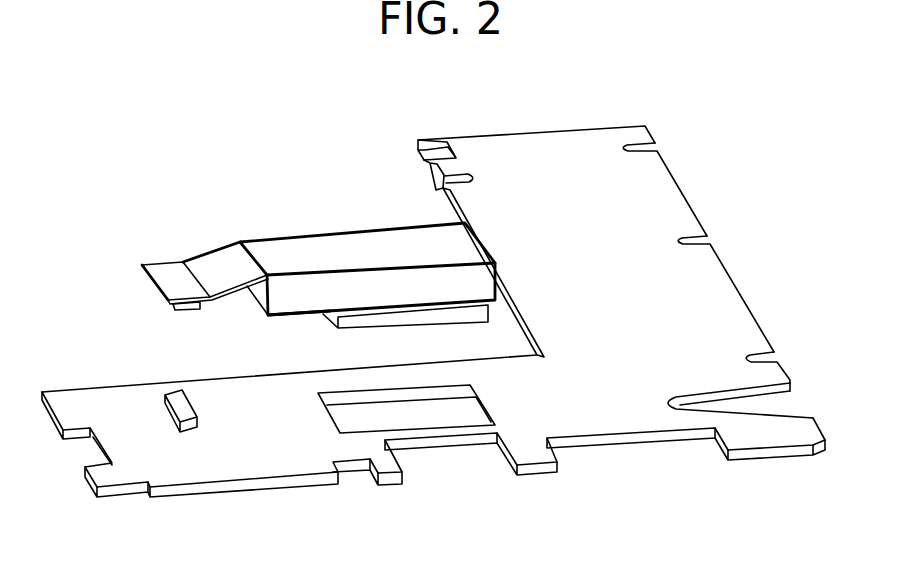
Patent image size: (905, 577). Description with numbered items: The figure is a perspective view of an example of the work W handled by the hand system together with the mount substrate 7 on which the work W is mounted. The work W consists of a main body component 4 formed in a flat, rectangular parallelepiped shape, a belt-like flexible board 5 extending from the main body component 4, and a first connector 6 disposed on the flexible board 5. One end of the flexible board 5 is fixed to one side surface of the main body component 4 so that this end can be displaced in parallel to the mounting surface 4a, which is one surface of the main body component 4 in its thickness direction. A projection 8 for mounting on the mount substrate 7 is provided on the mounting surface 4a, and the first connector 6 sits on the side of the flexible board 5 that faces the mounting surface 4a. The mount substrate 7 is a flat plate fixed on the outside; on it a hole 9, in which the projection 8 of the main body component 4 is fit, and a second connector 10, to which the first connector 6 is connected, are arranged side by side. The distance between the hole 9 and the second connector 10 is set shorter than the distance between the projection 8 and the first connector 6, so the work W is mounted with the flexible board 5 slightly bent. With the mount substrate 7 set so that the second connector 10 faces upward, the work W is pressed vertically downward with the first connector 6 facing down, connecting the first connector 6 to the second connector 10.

The main body component 4 is at (337, 230).
The mounting surface 4a is at (293, 315).
The flexible board 5 is at (218, 263).
The first connector 6 is at (188, 311).
The mount substrate 7 is at (563, 157).
The projection 8 is at (463, 326).
The hole 9 is at (473, 408).
The second connector 10 is at (177, 397).
The work W is at (264, 198).